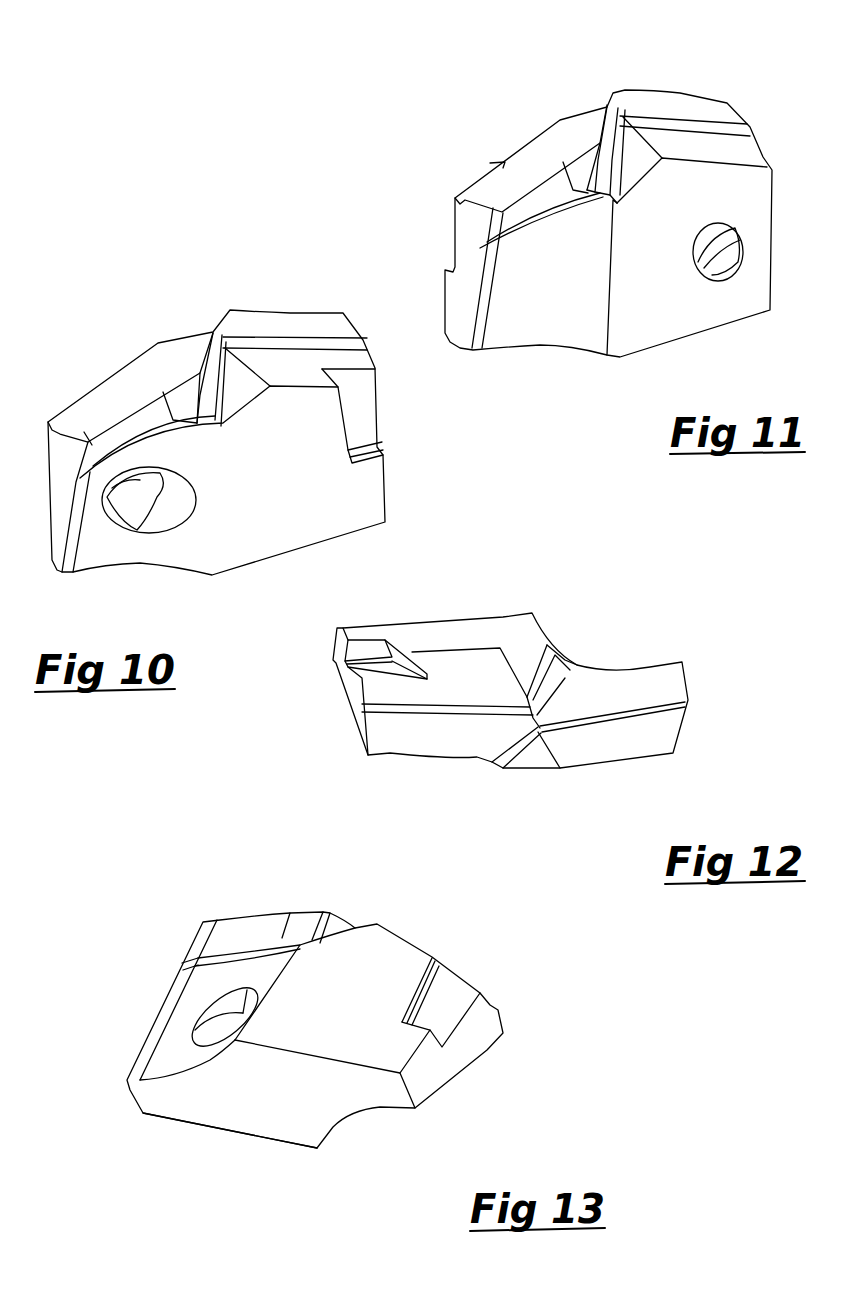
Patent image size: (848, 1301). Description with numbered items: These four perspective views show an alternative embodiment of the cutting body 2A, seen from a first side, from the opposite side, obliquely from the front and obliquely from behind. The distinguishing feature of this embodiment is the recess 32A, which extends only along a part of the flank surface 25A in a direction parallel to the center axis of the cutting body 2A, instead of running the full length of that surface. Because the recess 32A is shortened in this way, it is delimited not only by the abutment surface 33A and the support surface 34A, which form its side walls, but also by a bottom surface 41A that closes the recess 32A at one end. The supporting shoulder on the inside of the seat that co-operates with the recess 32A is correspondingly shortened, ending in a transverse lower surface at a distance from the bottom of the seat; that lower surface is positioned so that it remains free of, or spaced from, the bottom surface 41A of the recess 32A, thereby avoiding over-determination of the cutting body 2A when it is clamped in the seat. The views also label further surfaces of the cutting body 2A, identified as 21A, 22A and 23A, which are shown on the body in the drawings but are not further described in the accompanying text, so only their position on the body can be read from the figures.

In FIG. 10, the cutting body 2A is at (223, 306).
In FIG. 11, the cutting body 2A is at (583, 97).
In FIG. 12, the cutting body 2A is at (552, 618).
In FIG. 13, the cutting body 2A is at (305, 895).
In FIG. 13, the bottom face of insert 21A is at (253, 1123).
In FIG. 11, the first side face of insert 22A is at (680, 285).
In FIG. 10, the second side face of insert 23A is at (320, 486).
In FIG. 12, the flank surface 25A is at (345, 687).
In FIG. 10, the recess 32A is at (370, 418).
In FIG. 13, the recess 32A is at (442, 965).
In FIG. 12, the abutment surface 33A is at (403, 650).
In FIG. 12, the support surface 34A is at (382, 675).
In FIG. 12, the bottom surface 41A is at (372, 648).